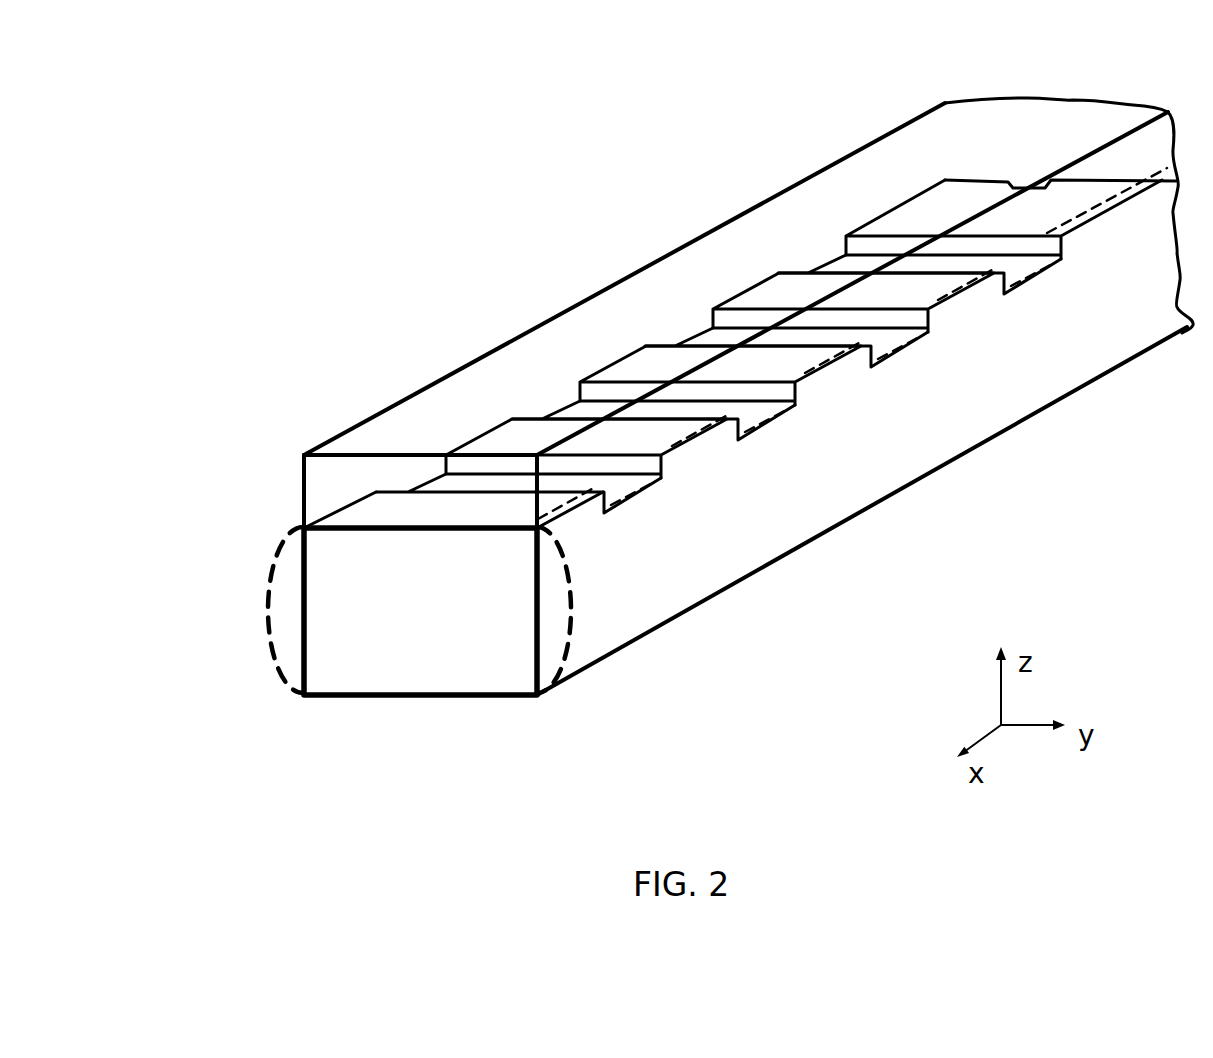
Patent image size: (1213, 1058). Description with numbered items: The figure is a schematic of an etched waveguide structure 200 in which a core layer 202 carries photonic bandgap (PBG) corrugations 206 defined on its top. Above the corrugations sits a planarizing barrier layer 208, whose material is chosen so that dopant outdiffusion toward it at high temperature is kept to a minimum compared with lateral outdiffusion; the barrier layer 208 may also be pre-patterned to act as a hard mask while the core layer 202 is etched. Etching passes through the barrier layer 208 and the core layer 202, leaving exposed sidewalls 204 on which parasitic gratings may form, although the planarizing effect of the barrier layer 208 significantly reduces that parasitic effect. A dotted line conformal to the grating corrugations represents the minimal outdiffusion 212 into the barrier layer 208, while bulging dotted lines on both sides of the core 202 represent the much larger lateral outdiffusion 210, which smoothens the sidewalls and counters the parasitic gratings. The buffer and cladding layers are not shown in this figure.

The etched waveguide structure 200 is at (226, 138).
The core layer 202 is at (441, 640).
The exposed sidewalls 204 is at (1015, 373).
The PBG corrugations 206 is at (865, 263).
The planarizing barrier layer 208 is at (578, 328).
The lateral outdiffusion 210 is at (268, 662).
The outdiffusion 212 is at (707, 424).